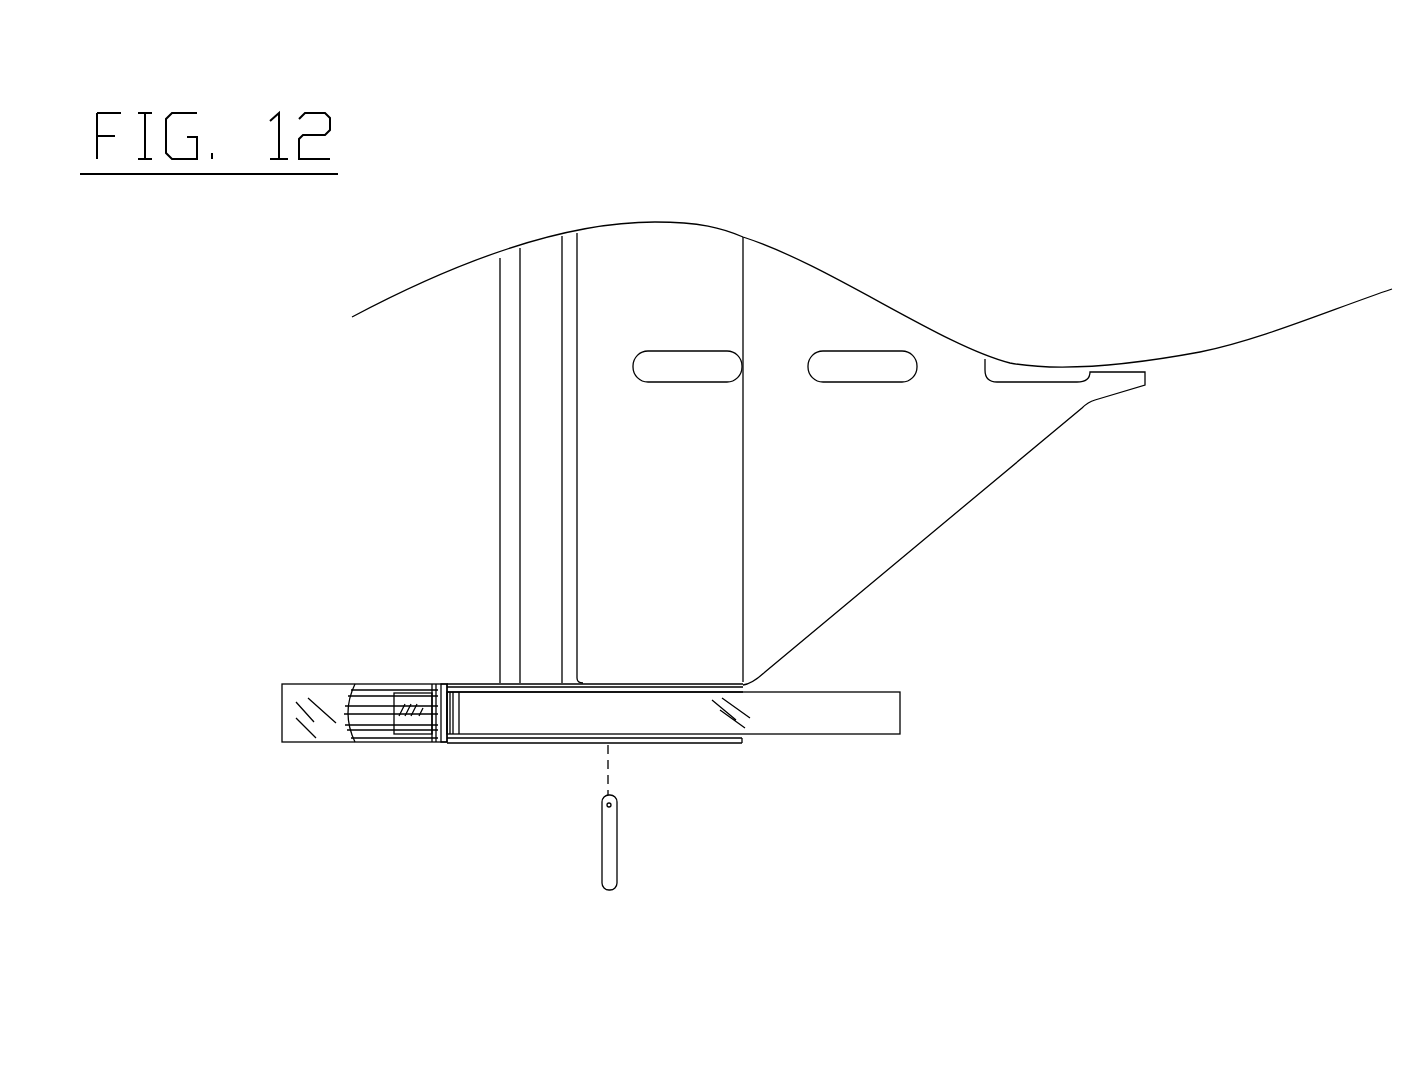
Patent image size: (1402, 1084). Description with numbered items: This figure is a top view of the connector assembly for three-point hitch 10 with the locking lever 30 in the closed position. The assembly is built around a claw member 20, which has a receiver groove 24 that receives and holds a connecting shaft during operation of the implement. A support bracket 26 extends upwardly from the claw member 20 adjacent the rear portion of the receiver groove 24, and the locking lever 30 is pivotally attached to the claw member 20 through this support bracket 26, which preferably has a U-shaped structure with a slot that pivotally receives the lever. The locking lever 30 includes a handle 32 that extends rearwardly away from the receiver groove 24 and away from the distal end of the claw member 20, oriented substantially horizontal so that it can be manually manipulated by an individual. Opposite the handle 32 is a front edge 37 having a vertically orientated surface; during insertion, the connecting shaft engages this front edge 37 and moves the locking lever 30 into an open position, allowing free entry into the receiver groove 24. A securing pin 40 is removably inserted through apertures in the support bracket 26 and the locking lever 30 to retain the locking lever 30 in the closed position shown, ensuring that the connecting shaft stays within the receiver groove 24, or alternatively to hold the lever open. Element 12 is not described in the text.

The connector assembly for three-point hitch 10 is at (872, 417).
The panel 12 is at (892, 525).
The claw member 20 is at (627, 691).
The receiver groove 24 is at (377, 705).
The support bracket 26 is at (462, 687).
The locking lever 30 is at (773, 793).
The handle 32 is at (833, 720).
The front edge 37 is at (417, 735).
The securing pin 40 is at (610, 855).